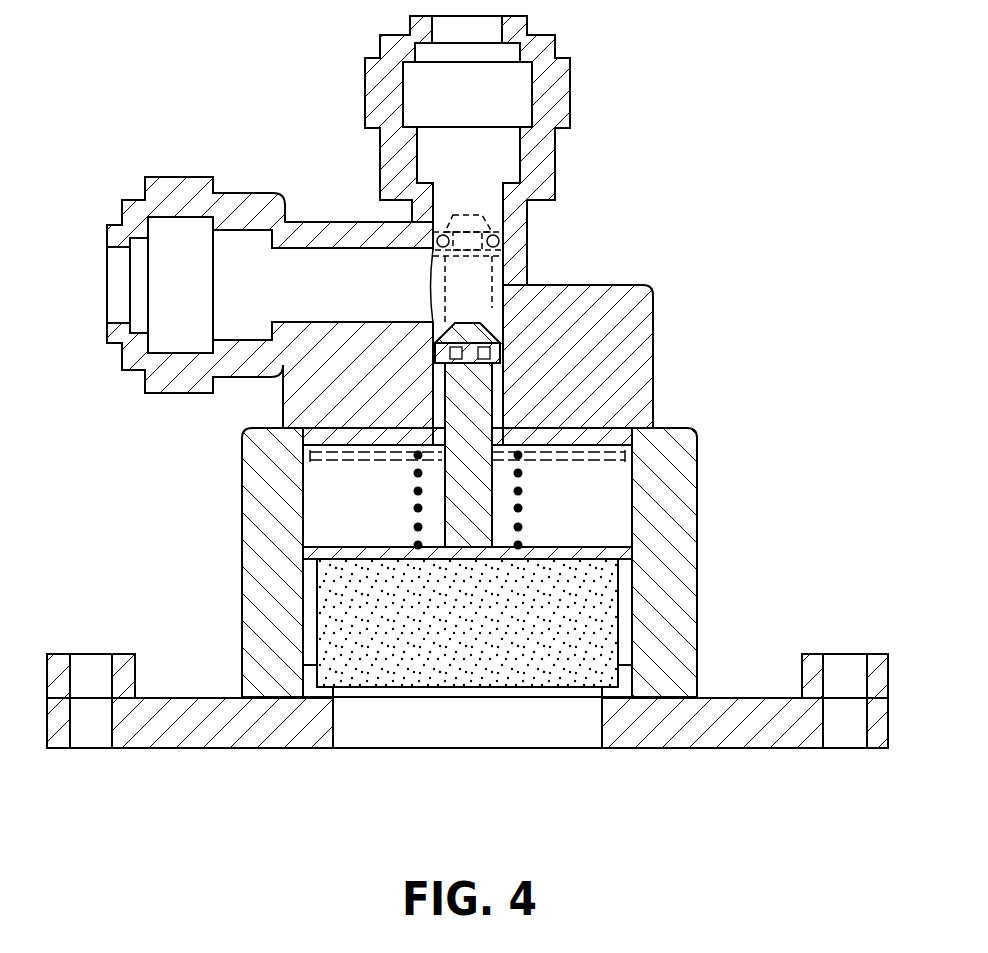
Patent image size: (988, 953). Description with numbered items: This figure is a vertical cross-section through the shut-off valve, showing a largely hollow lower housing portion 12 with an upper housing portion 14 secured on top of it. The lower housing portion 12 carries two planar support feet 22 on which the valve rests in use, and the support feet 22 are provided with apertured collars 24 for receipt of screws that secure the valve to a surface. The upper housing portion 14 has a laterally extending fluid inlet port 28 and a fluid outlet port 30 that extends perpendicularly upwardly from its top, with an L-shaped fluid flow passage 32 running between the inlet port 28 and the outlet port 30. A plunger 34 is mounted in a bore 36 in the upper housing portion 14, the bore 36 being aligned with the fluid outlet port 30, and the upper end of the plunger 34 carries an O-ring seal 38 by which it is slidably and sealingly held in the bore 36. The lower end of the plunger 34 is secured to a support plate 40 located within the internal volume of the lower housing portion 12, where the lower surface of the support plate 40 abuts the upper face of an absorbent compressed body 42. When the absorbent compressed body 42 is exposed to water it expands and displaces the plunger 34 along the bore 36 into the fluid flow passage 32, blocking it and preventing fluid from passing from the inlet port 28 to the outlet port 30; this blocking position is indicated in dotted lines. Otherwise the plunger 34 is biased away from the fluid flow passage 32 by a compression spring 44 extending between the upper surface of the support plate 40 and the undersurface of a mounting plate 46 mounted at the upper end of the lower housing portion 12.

The lower housing portion 12 is at (733, 500).
The upper housing portion 14 is at (680, 332).
The support feet 22 is at (183, 740).
The apertured collars 24 is at (62, 666).
The fluid inlet port 28 is at (170, 164).
The fluid outlet port 30 is at (598, 80).
The fluid flow passage 32 is at (503, 196).
The plunger 34 is at (480, 410).
The bore 36 is at (500, 322).
The O-ring seal 38 is at (505, 350).
The support plate 40 is at (332, 547).
The absorbent compressed body 42 is at (335, 622).
The compression spring 44 is at (522, 508).
The mounting plate 46 is at (318, 436).